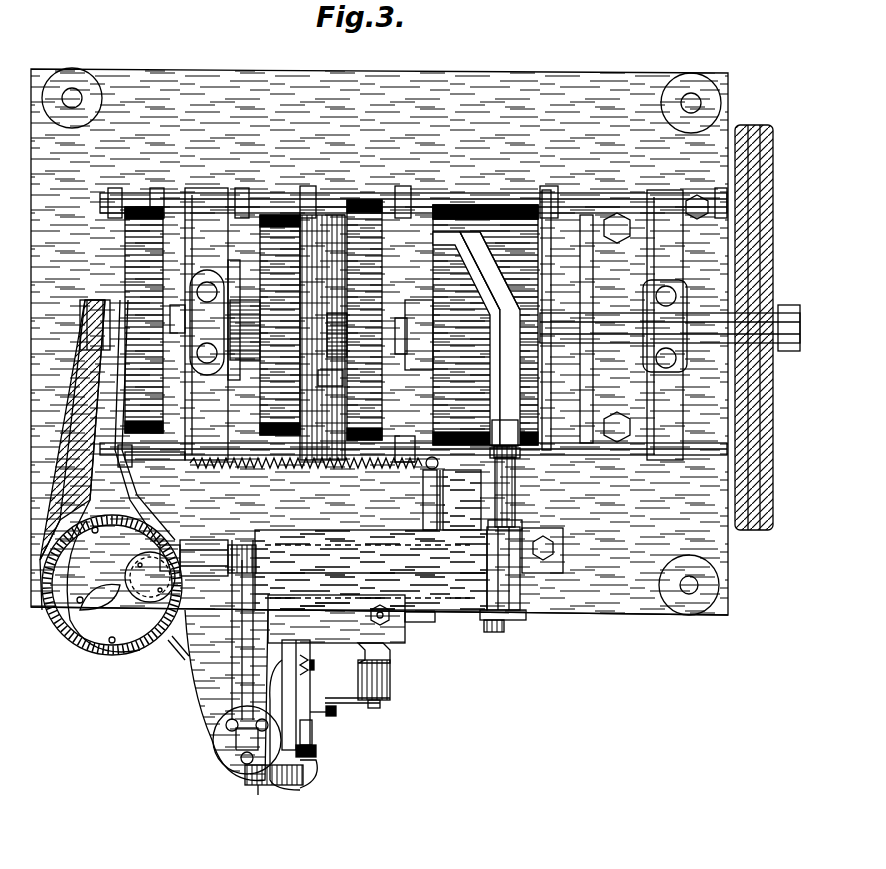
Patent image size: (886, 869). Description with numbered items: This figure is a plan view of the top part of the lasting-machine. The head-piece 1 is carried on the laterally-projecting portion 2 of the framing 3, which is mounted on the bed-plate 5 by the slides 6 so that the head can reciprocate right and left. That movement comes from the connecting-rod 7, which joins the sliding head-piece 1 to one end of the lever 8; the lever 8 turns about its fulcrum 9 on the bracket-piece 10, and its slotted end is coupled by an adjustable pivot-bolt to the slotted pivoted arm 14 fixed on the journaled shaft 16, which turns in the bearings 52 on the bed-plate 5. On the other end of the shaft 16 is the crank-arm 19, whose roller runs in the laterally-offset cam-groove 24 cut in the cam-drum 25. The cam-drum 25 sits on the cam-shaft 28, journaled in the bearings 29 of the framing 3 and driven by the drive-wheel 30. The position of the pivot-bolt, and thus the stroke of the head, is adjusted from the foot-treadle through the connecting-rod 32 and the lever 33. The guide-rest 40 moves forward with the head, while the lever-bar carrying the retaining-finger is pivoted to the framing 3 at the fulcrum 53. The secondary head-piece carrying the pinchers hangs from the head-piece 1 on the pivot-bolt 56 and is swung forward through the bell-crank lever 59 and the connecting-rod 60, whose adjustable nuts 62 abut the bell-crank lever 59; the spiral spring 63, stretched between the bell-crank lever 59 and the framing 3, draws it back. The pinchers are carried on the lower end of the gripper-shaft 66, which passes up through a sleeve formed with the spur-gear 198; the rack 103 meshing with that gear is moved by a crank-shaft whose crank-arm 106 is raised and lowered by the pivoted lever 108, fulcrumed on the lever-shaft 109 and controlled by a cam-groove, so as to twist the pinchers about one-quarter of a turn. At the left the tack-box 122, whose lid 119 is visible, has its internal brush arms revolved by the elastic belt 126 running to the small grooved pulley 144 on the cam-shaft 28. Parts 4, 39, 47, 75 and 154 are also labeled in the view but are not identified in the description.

The head-piece 1 is at (379, 355).
The laterally-projecting portion 2 is at (438, 612).
The framing 3 is at (207, 195).
The gear wheel 4 is at (253, 320).
The bed-plate 5 is at (643, 616).
The slides 6 is at (421, 629).
The connecting-rod 7 is at (463, 612).
The lever 8 is at (512, 612).
The fulcrum 9 is at (522, 512).
The bracket-piece 10 is at (521, 585).
The pivoted arm 14 is at (524, 612).
The journaled shaft 16 is at (516, 498).
The crank-arm 19 is at (370, 203).
The cam-groove 24 is at (466, 325).
The cam-drum 25 is at (528, 205).
The cam-shaft 28 is at (600, 315).
The journal-bearings 29 is at (438, 322).
The drive-wheel 30 is at (775, 243).
The connecting-rod 32 is at (151, 457).
The lever 33 is at (208, 566).
The lug 39 is at (313, 730).
The guide-rest 40 is at (317, 767).
The pendulum arm 47 is at (228, 748).
The bearings 52 is at (548, 420).
The fulcrum 53 is at (290, 715).
The pivot-bolt 56 is at (316, 660).
The bell-crank lever 59 is at (443, 510).
The connecting-rod 60 is at (462, 500).
The nuts 62 is at (420, 470).
The spiral spring 63 is at (352, 470).
The gripper-shaft 66 is at (270, 786).
The pinion 75 is at (384, 432).
The rack 103 is at (336, 712).
The crank-arm 106 is at (392, 682).
The pivoted lever 108 is at (335, 380).
The lever-shaft 109 is at (570, 460).
The lid 119 is at (98, 610).
The tack-box 122 is at (84, 645).
The elastic belt 126 is at (78, 463).
The small grooved pulley 144 is at (80, 300).
The block 154 is at (316, 748).
The spur-gear 198 is at (340, 722).